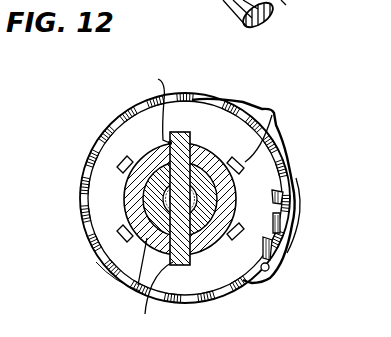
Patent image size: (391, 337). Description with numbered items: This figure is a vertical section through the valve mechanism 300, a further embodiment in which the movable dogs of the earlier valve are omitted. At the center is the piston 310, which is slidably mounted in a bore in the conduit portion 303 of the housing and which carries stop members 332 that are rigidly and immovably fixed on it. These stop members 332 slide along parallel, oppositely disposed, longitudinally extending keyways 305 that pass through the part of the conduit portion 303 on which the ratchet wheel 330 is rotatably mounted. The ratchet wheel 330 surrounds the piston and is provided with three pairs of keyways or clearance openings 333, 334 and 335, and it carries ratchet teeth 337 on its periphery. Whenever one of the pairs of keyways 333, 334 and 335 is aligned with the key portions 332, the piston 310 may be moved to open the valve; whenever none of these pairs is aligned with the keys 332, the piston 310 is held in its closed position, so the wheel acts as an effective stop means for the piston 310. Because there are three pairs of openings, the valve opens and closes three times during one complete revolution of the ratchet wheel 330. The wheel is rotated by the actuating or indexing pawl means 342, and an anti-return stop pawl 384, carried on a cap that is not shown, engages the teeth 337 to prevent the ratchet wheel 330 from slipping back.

The valve mechanism 300 is at (112, 118).
The conduit portion 303 is at (137, 178).
The keyways 305 is at (141, 199).
The piston 310 is at (135, 280).
The ratchet wheel 330 is at (103, 197).
The stop members 332 is at (173, 143).
The keyways 333 is at (118, 162).
The keyways 334 is at (182, 266).
The keyways 335 is at (275, 118).
The ratchet teeth 337 is at (140, 290).
The indexing pawl means 342 is at (301, 216).
The anti-return stop pawl 384 is at (270, 269).